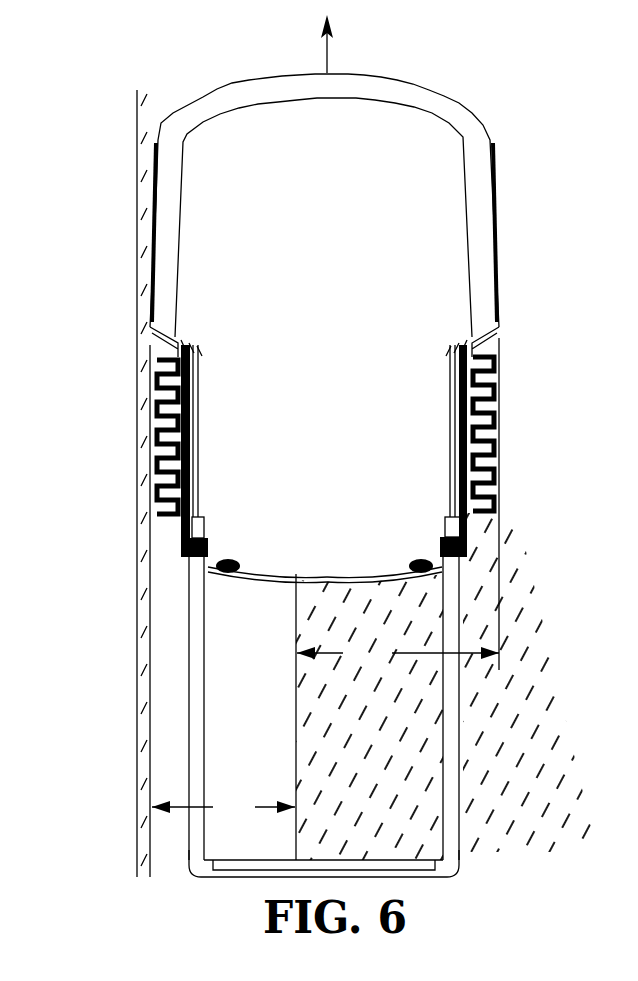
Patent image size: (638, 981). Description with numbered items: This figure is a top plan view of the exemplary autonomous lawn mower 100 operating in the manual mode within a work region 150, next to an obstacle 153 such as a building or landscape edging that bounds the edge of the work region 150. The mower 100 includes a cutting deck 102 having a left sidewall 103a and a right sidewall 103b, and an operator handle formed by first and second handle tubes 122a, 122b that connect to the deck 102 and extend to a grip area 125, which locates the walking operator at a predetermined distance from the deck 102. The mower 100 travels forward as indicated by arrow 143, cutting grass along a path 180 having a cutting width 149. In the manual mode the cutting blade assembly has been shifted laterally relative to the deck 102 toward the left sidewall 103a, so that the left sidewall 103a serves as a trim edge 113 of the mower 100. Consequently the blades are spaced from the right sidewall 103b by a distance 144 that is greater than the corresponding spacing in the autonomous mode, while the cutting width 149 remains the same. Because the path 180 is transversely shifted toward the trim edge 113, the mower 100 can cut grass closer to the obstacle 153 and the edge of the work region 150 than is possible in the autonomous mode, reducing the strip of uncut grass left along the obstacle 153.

The autonomous lawn mower 100 is at (110, 85).
The cutting deck 102 is at (512, 125).
The left sidewall 103a is at (150, 265).
The right sidewall 103b is at (500, 287).
The trim edge 113 is at (150, 308).
The first handle tube 122a is at (205, 630).
The second handle tube 122b is at (442, 630).
The grip area 125 is at (235, 877).
The arrow 143 is at (330, 47).
The distance 144 is at (398, 653).
The cutting width 149 is at (223, 807).
The work region 150 is at (522, 744).
The obstacle 153 is at (117, 446).
The path 180 is at (258, 708).